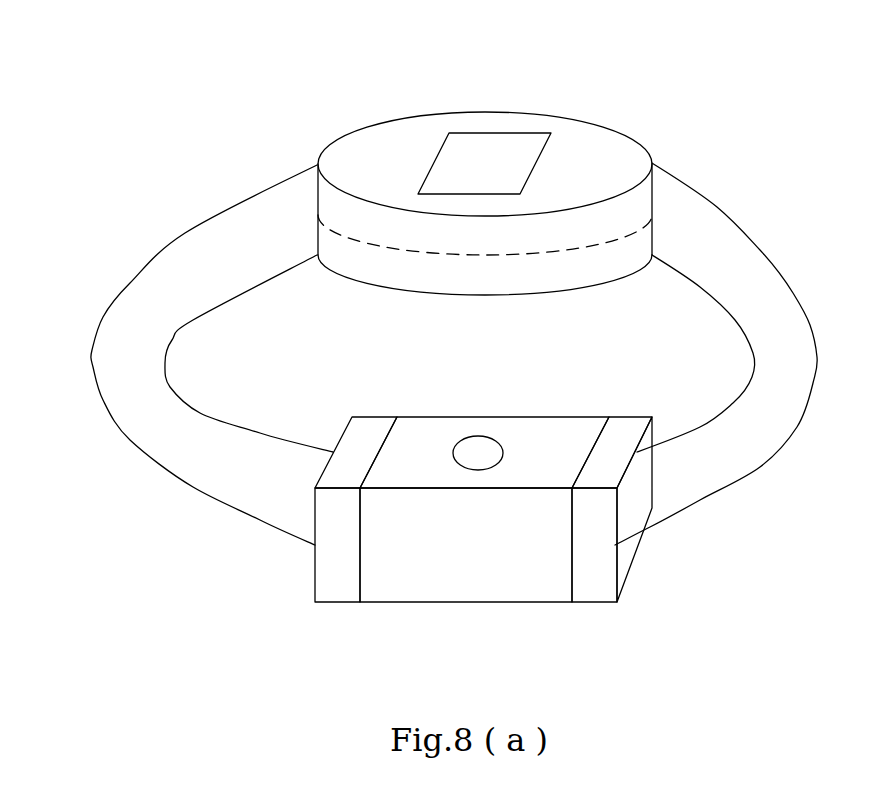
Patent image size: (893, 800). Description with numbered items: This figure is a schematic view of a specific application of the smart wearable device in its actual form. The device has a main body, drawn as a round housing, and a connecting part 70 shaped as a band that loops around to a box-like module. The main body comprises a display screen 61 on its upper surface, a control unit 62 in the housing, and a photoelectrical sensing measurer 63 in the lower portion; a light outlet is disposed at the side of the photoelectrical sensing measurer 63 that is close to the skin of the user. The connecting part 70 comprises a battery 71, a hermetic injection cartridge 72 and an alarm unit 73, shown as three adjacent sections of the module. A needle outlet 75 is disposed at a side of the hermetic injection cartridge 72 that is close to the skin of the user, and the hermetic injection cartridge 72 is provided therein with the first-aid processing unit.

The display screen 61 is at (485, 112).
The control unit 62 is at (637, 205).
The photoelectrical sensing measurer 63 is at (368, 255).
The connecting part 70 is at (185, 233).
The battery 71 is at (330, 602).
The hermetic injection cartridge 72 is at (465, 603).
The alarm unit 73 is at (592, 603).
The needle outlet 75 is at (478, 453).